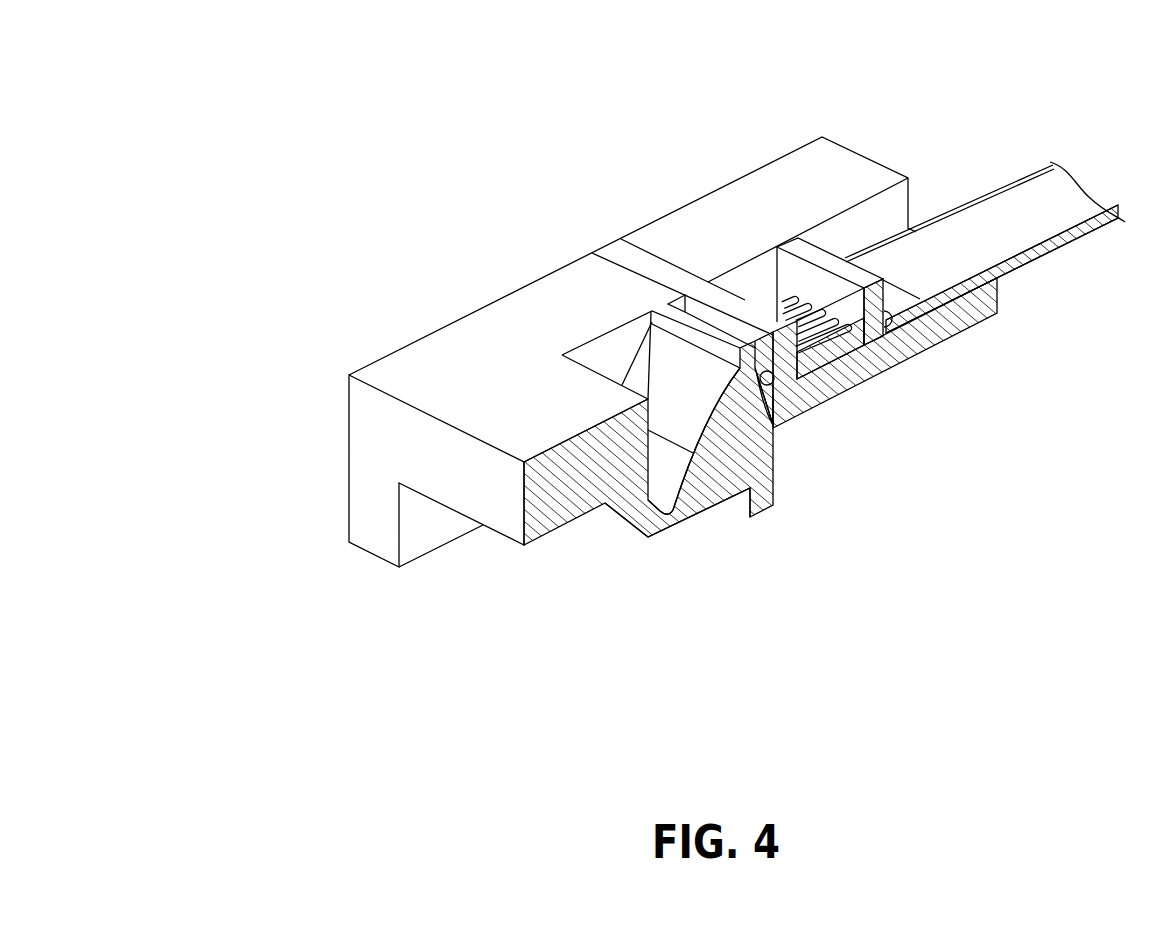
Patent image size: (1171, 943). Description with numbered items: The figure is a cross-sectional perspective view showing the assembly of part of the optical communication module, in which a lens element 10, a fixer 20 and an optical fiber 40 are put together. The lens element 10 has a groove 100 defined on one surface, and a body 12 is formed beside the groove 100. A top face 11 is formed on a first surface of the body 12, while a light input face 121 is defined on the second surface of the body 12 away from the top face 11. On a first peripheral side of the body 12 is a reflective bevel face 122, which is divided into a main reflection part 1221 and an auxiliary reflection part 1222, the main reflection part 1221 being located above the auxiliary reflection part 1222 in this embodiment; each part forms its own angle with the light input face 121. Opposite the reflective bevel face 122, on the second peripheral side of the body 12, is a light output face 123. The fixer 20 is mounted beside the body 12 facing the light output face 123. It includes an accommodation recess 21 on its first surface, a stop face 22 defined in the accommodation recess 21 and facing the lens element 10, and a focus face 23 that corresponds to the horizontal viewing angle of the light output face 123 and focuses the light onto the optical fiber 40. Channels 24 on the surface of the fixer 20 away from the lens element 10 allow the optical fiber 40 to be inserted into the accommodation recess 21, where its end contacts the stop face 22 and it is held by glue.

The lens element 10 is at (270, 318).
The groove 100 is at (607, 356).
The top face 11 is at (733, 307).
The body 12 is at (845, 493).
The light input face 121 is at (687, 515).
The reflective bevel face 122 is at (552, 180).
The main reflection part 1221 is at (928, 478).
The auxiliary reflection part 1222 is at (677, 478).
The light output face 123 is at (772, 390).
The fixer 20 is at (741, 57).
The accommodation recess 21 is at (823, 283).
The stop face 22 is at (755, 305).
The focus face 23 is at (774, 380).
The channel 24 is at (847, 323).
The optical fiber 40 is at (1068, 192).